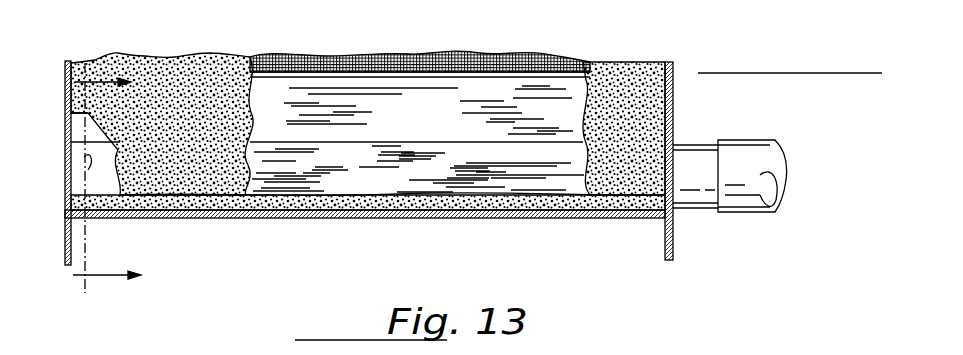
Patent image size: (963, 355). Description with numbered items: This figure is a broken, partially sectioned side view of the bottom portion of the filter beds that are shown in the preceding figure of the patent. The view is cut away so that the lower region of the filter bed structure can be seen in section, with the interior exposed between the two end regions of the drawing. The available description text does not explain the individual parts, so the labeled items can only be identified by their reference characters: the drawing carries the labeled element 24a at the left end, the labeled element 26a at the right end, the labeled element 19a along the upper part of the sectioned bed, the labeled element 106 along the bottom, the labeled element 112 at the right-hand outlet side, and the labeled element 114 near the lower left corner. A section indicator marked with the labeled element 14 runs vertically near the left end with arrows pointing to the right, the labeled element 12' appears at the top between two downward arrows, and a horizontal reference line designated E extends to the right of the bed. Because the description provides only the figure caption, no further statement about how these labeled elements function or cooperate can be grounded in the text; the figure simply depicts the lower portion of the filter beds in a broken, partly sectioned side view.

The end wall 24a is at (66, 84).
The end wall 26a is at (673, 73).
The screen/grid layer 19a is at (303, 55).
The bottom plate 106 is at (443, 218).
The outlet pipe collar 112 is at (750, 195).
The cavity opening 114 is at (70, 185).
The section line 14 is at (123, 179).
The arrows 12' is at (469, 8).
The line E is at (801, 75).